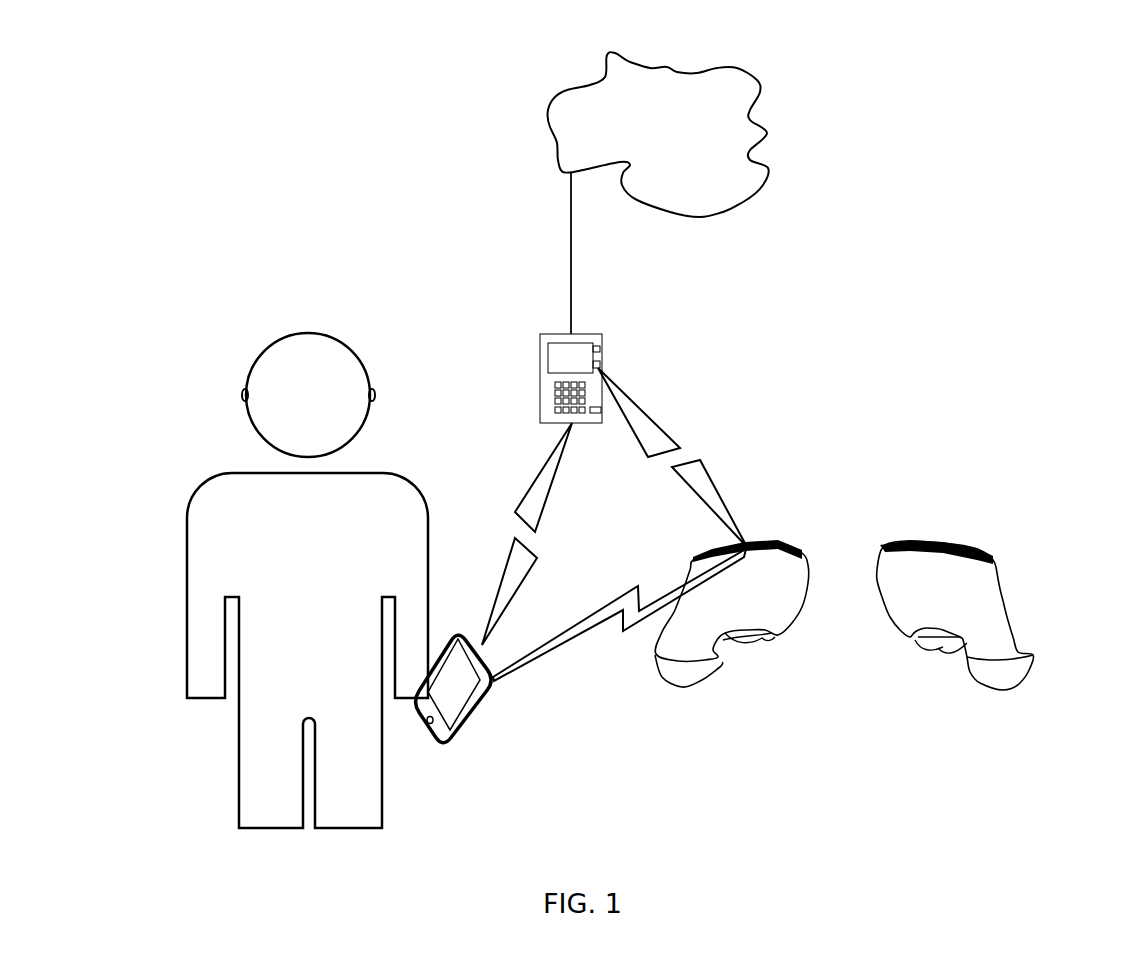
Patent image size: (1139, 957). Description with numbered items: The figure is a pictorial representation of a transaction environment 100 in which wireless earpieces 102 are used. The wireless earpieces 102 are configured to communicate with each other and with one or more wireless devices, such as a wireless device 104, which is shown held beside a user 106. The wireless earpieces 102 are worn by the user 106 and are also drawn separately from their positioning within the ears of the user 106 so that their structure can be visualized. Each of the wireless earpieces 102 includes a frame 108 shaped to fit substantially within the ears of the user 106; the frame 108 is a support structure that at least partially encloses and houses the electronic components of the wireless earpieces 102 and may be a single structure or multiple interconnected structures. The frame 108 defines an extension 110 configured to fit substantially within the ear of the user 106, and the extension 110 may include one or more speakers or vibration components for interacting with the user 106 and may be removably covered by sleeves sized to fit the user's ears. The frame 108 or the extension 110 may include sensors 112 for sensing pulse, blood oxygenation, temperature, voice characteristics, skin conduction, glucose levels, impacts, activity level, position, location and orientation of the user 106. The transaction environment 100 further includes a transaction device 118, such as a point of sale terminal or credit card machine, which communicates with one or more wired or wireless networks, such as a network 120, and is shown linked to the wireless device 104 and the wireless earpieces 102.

The transaction environment 100 is at (782, 31).
The wireless earpieces 102 is at (245, 389).
The wireless device 104 is at (468, 730).
The user 106 is at (324, 552).
The frame 108 is at (985, 570).
The extension 110 is at (997, 630).
The sensors 112 is at (937, 650).
The transaction device 118 is at (600, 350).
The network 120 is at (676, 146).